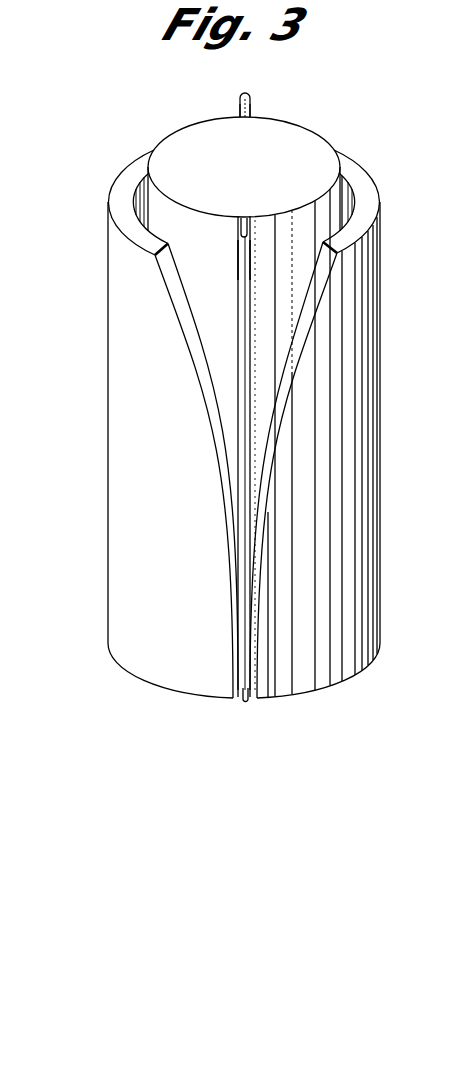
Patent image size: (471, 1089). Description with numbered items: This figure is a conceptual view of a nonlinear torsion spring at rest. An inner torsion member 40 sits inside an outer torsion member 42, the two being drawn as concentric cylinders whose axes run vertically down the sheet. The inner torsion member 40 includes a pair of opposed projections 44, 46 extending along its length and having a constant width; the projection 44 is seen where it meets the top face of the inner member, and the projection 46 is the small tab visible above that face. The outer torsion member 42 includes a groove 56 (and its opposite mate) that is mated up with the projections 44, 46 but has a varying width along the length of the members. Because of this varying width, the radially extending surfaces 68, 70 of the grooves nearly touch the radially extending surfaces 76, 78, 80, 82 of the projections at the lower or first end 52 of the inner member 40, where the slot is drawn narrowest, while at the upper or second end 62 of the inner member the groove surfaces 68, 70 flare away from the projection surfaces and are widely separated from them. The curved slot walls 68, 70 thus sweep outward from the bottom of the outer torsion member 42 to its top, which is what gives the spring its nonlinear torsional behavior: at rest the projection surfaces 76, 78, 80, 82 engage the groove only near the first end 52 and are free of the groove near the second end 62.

The inner torsion member 40 is at (330, 212).
The outer torsion member 42 is at (355, 492).
The projection 44 is at (250, 218).
The projection 46 is at (248, 100).
The first end 52 is at (250, 702).
The groove 56 is at (238, 702).
The second end 62 is at (313, 153).
The radially extending surface of groove 68 is at (300, 305).
The radially extending surface of groove 70 is at (178, 285).
The radially extending surface of projection 76 is at (250, 265).
The radially extending surface of projection 78 is at (238, 258).
The radially extending surface of projection 80 is at (252, 105).
The radially extending surface of projection 82 is at (240, 100).